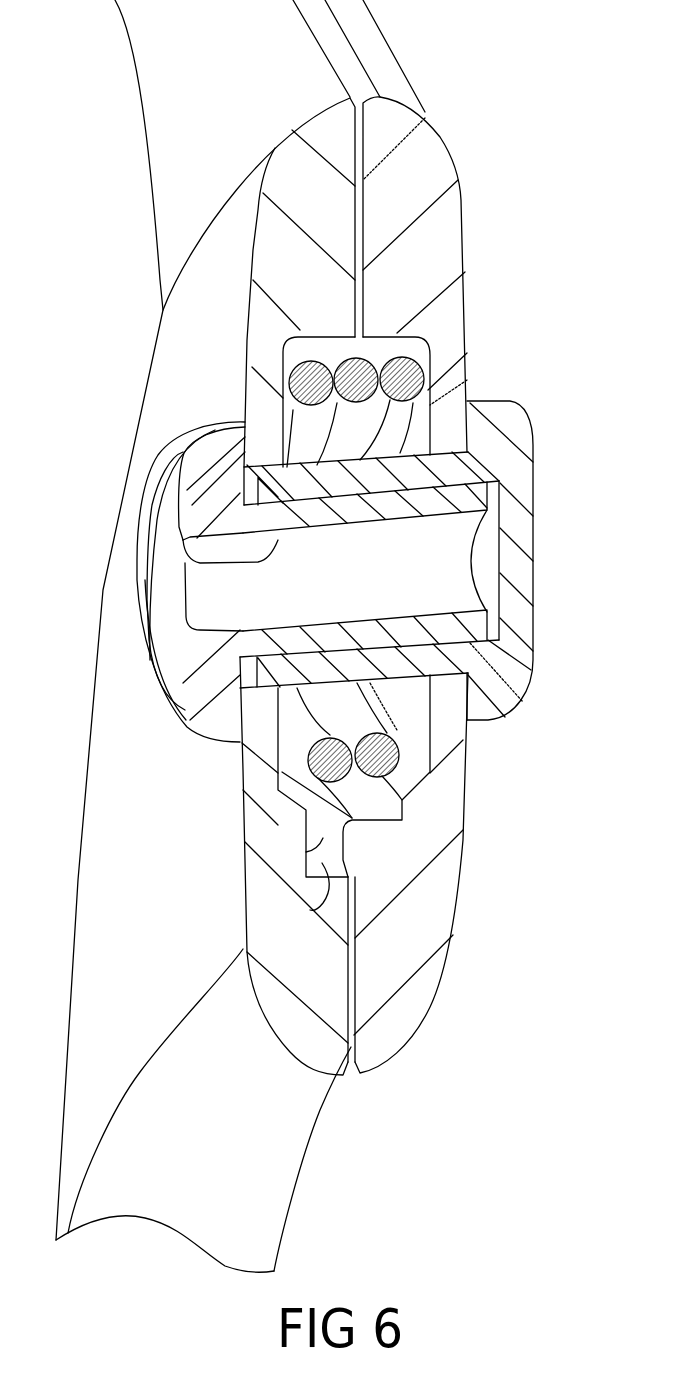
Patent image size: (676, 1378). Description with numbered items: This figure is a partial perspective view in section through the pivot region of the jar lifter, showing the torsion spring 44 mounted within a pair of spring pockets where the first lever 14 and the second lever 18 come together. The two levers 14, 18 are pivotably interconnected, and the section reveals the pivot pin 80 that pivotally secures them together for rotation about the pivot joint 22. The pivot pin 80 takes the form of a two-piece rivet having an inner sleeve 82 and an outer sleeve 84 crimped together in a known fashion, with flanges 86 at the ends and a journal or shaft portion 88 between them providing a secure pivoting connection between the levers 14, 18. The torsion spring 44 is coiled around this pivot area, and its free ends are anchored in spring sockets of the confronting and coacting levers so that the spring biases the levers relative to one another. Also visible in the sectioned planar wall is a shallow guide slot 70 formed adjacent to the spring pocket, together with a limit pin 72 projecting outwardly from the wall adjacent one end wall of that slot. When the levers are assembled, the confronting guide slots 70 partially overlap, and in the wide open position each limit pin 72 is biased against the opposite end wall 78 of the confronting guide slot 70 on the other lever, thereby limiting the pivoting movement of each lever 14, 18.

The first lever 14 is at (385, 62).
The second lever 18 is at (213, 122).
The pivot joint 22 is at (143, 632).
The torsion spring 44 is at (258, 393).
The guide slot 70 is at (306, 913).
The limit pin 72 is at (352, 862).
The end wall 78 is at (306, 852).
The pivot pin 80 is at (170, 475).
The inner sleeve 82 is at (180, 560).
The outer sleeve 84 is at (425, 468).
The flanges 86 is at (190, 719).
The journal or shaft portion 88 is at (467, 383).